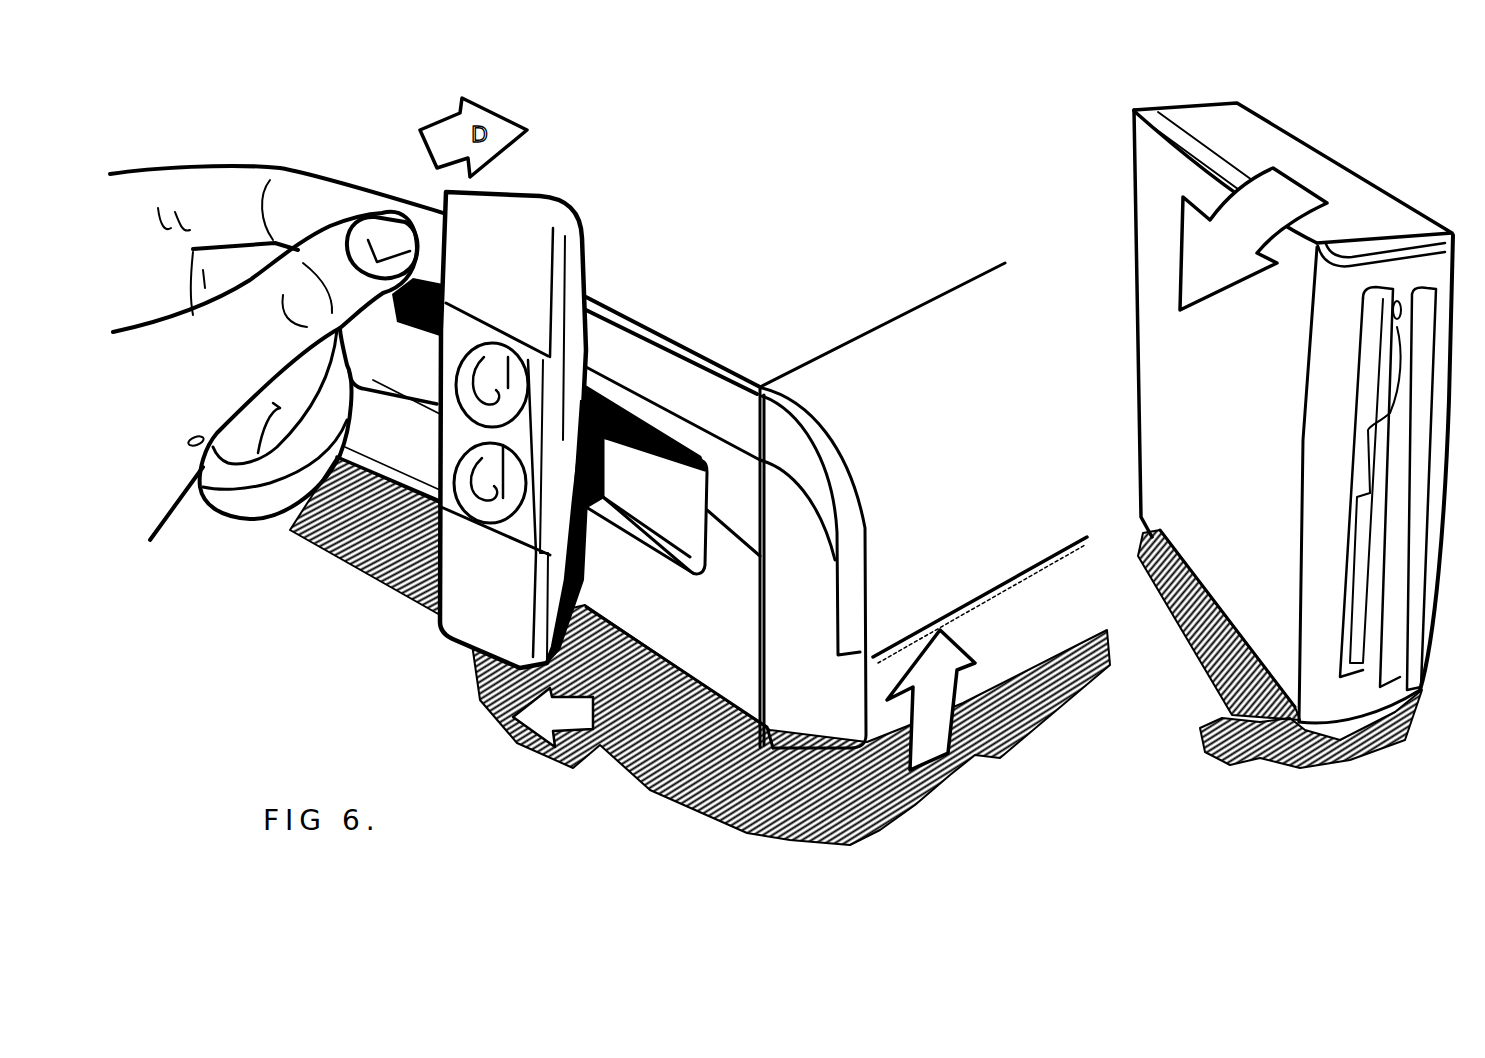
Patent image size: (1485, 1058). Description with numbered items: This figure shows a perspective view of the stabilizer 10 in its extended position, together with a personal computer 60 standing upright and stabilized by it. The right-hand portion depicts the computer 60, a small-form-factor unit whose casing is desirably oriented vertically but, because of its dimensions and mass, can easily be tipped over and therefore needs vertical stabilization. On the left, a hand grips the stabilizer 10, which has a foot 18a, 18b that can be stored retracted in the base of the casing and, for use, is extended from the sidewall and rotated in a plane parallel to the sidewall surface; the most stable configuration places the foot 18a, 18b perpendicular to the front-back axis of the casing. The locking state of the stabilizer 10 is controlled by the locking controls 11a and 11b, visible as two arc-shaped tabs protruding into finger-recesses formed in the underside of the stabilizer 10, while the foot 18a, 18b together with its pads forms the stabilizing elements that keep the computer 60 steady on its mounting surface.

The stabilizer 10 is at (737, 439).
The locking control 11a is at (497, 399).
The locking control 11b is at (480, 470).
The foot 18a is at (476, 208).
The foot 18b is at (482, 620).
The computer 60 is at (803, 229).